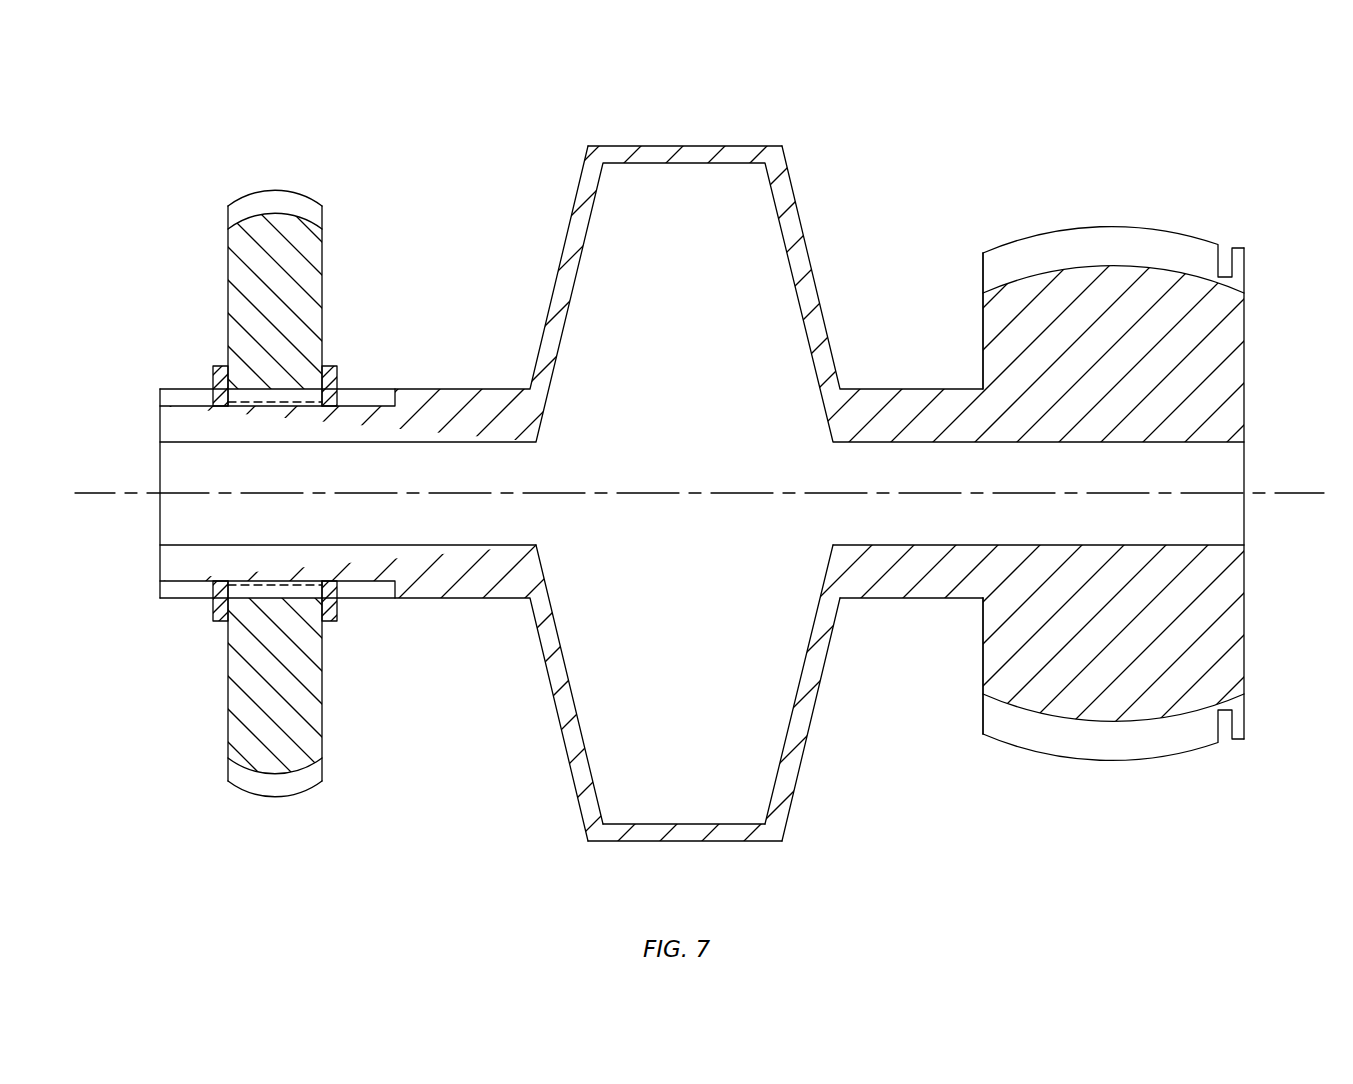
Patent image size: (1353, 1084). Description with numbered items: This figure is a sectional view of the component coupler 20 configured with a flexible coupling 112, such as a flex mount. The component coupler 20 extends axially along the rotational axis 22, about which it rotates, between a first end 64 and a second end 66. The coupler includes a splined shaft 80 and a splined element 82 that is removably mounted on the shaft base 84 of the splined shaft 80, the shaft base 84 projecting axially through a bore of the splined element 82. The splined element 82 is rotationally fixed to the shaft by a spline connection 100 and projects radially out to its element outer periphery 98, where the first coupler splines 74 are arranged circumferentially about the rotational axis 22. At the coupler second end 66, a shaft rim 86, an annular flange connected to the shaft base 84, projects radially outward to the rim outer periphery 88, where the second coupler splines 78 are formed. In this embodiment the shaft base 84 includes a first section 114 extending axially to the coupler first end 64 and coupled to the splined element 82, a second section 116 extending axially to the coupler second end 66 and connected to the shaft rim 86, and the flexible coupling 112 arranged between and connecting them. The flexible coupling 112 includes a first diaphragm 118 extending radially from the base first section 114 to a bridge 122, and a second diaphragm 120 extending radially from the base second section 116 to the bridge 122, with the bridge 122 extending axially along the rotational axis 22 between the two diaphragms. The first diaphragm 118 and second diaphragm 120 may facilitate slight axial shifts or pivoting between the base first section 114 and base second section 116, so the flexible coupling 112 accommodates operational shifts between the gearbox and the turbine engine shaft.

The component coupler 20 is at (165, 138).
The rotational axis 22 is at (1308, 494).
The first end of the component coupler 64 is at (158, 423).
The second end of the component coupler 66 is at (1244, 412).
The first coupler splines 74 is at (322, 218).
The second coupler splines 78 is at (980, 265).
The splined shaft 80 is at (1258, 343).
The splined element 82 is at (208, 294).
The shaft base 84 is at (905, 612).
The shaft rim 86 is at (1258, 658).
The outer periphery of the shaft rim 88 is at (1105, 225).
The element outer periphery 98 is at (280, 188).
The spline connection 100 is at (272, 412).
The flexible coupling 112 is at (806, 126).
The first section of the shaft base 114 is at (480, 544).
The second section of the shaft base 116 is at (893, 544).
The first diaphragm 118 is at (577, 685).
The second diaphragm 120 is at (783, 737).
The bridge 122 is at (757, 842).